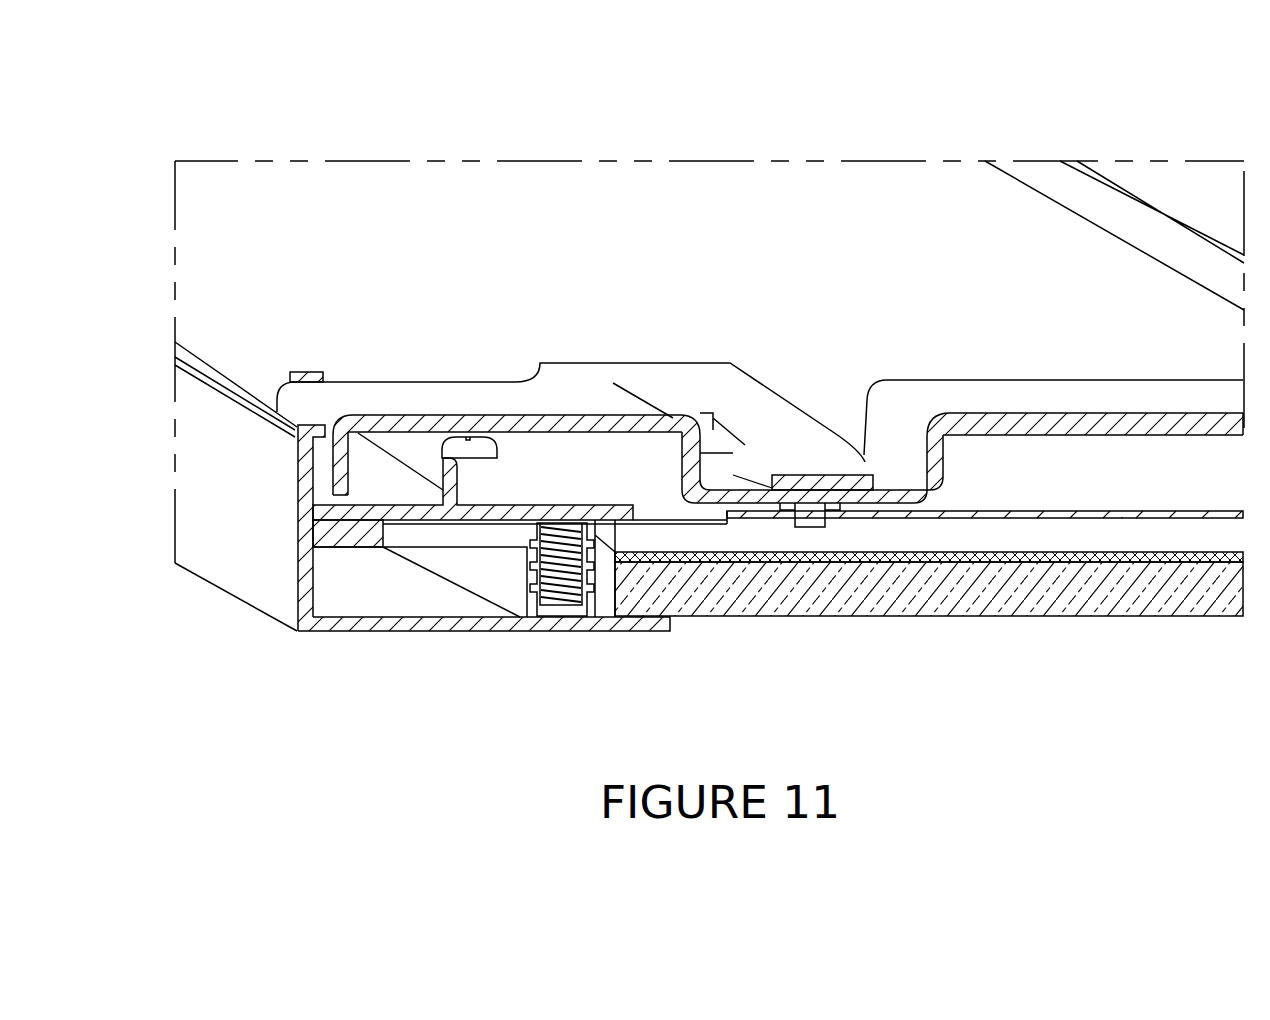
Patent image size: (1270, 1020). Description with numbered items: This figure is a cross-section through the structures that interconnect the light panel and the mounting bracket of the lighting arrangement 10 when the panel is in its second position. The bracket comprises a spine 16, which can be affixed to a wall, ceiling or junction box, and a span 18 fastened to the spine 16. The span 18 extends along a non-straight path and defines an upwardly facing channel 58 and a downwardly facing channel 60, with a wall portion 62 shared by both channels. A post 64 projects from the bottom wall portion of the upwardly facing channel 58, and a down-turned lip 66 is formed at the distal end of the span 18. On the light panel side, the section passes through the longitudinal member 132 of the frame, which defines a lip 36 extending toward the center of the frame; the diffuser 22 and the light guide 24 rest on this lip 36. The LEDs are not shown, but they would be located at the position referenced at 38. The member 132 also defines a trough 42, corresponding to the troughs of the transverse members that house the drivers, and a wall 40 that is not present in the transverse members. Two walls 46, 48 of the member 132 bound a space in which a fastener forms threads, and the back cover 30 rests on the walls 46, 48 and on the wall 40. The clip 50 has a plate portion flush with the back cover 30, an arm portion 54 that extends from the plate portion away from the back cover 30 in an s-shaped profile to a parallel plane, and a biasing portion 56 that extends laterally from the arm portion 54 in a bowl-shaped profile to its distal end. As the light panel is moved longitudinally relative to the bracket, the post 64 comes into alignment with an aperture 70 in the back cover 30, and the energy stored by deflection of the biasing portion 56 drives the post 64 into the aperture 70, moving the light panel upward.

The lighting arrangement 10 is at (413, 100).
The spine 16 is at (1073, 185).
The span 18 is at (1020, 383).
The diffuser 22 is at (1210, 593).
The light guide 24 is at (1033, 553).
The back cover 30 is at (1122, 517).
The lip 36 is at (662, 633).
The LED position 38 is at (610, 583).
The wall 40 is at (357, 535).
The trough 42 is at (386, 594).
The wall 46 is at (588, 594).
The wall 48 is at (534, 590).
The clip 50 is at (603, 332).
The arm portion 54 is at (688, 377).
The biasing portion 56 is at (802, 460).
The upwardly facing channel 58 is at (848, 370).
The downwardly facing channel 60 is at (426, 499).
The wall portion 62 is at (690, 467).
The post 64 is at (803, 508).
The down-turned lip 66 is at (337, 465).
The aperture 70 is at (887, 512).
The longitudinal member 132 is at (233, 572).